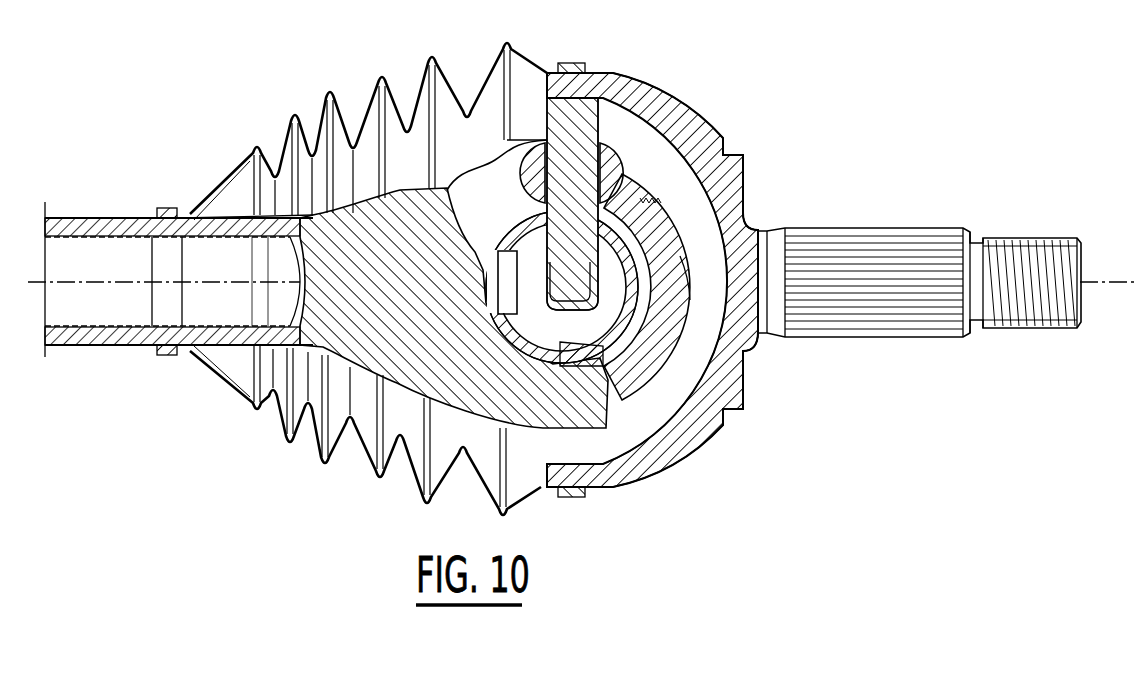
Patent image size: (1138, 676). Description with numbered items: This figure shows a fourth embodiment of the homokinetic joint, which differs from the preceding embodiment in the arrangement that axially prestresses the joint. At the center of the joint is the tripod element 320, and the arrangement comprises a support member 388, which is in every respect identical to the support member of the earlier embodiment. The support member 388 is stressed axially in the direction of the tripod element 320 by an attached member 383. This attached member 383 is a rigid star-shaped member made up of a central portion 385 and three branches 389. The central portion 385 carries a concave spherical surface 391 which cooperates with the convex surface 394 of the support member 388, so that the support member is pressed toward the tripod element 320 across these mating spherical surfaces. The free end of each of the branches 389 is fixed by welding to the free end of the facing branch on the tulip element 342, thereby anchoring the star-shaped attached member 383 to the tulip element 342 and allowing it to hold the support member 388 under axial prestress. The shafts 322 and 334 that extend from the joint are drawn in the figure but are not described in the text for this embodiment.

The tripod element 320 is at (577, 168).
The second shaft 322 is at (885, 224).
The first shaft 334 is at (78, 218).
The tulip element 342 is at (411, 322).
The attached member 383 is at (693, 256).
The central portion 385 is at (700, 310).
The support member 388 is at (668, 212).
The branches 389 is at (673, 300).
The concave spherical surface 391 is at (596, 268).
The convex surface 394 is at (607, 347).